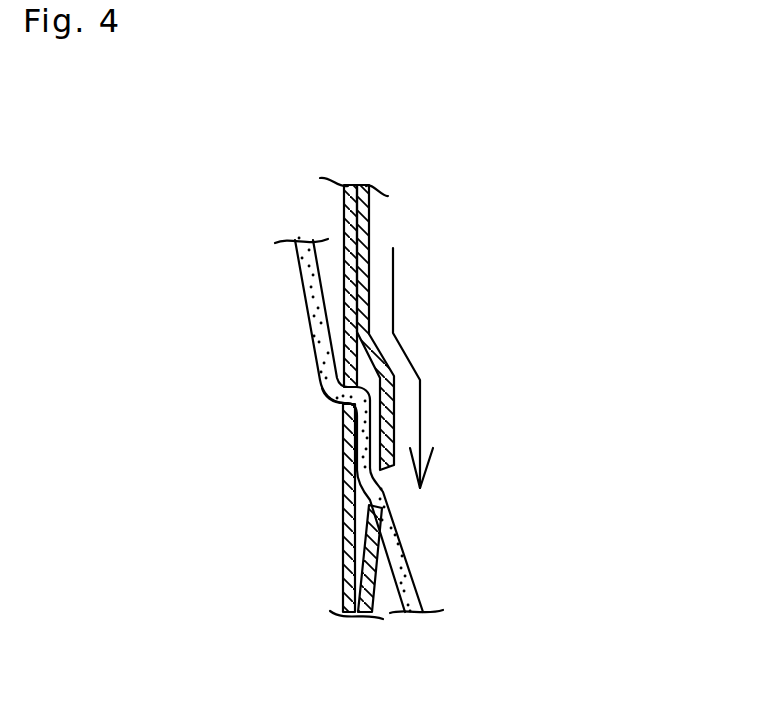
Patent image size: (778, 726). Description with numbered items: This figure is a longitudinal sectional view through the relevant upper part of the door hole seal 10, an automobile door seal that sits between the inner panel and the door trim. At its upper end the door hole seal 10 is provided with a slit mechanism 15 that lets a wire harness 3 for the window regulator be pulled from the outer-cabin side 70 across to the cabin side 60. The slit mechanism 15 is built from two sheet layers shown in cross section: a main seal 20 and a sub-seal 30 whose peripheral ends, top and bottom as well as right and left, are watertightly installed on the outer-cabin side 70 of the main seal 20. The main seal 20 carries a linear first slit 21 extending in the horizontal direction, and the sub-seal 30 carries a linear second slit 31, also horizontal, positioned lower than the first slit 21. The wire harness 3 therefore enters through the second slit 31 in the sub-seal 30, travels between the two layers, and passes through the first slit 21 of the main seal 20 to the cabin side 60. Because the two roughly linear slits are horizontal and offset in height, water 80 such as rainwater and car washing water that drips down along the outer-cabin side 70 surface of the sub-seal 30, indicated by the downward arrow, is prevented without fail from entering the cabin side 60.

The door hole seal 10 is at (419, 153).
The slit mechanism 15 is at (414, 263).
The main seal 20 is at (345, 199).
The first slit 21 is at (340, 403).
The sub-seal 30 is at (372, 217).
The second slit 31 is at (385, 483).
The wire harness 3 is at (303, 288).
The cabin side 60 is at (200, 405).
The outer-cabin side 70 is at (542, 400).
The water 80 is at (393, 310).